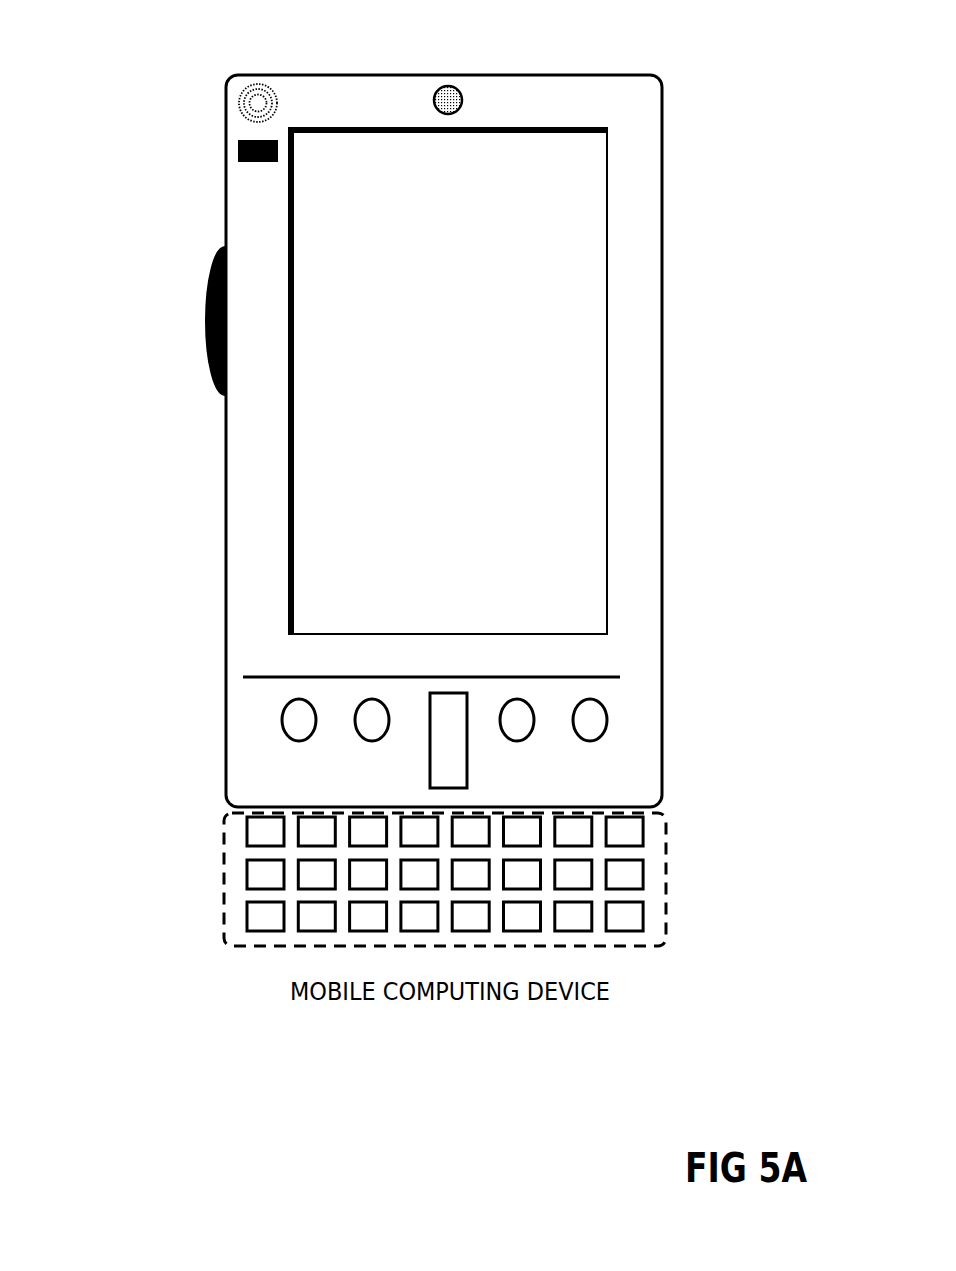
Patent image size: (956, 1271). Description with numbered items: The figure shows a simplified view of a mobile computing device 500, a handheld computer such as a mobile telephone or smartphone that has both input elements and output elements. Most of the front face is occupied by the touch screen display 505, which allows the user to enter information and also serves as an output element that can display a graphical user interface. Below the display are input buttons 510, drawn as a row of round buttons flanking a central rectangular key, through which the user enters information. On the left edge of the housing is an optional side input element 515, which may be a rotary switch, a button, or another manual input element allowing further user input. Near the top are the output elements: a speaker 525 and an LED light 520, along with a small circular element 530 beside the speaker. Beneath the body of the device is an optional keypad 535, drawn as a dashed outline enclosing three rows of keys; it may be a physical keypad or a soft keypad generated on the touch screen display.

The mobile computing device 500 is at (663, 95).
The touch screen display 505 is at (312, 554).
The input buttons 510 is at (595, 732).
The side input element 515 is at (203, 331).
The LED light 520 is at (238, 141).
The speaker 525 is at (242, 93).
The camera 530 is at (460, 98).
The keypad 535 is at (224, 908).